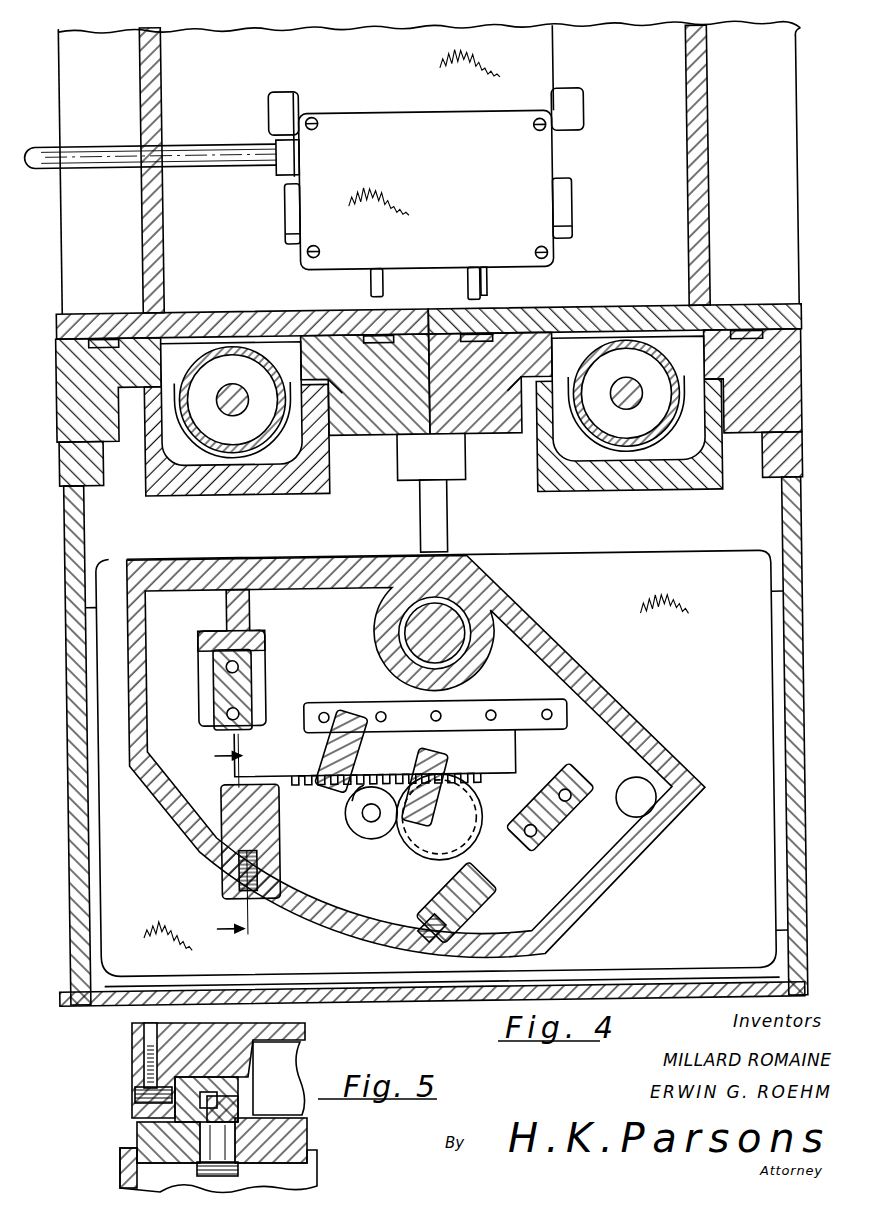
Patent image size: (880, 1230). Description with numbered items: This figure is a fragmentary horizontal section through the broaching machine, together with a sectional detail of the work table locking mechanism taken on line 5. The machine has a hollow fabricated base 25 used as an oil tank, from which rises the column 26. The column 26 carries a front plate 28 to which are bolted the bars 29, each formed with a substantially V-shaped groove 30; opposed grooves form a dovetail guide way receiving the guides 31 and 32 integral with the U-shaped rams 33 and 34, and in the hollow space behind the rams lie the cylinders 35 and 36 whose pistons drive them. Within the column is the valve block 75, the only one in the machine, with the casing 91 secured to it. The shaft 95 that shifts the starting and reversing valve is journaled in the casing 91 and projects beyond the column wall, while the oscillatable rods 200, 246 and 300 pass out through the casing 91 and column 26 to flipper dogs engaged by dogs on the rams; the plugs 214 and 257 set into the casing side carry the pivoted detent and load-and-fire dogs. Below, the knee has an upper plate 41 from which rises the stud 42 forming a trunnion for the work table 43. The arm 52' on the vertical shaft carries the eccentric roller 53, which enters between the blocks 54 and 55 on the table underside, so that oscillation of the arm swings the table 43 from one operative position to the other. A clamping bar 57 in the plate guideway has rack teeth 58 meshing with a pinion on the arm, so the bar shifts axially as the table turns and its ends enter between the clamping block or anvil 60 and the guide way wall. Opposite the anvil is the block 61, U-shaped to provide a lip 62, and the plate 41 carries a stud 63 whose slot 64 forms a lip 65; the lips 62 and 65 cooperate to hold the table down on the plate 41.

In FIG. 4, the valve block 75 is at (561, 62).
In FIG. 4, the column 26 is at (715, 95).
In FIG. 4, the shaft 95 is at (228, 151).
In FIG. 4, the casing 91 is at (563, 170).
In FIG. 4, the plug 257 is at (295, 220).
In FIG. 4, the plug 214 is at (580, 210).
In FIG. 4, the oscillatable rod 246 is at (377, 296).
In FIG. 4, the oscillatable rod 200 is at (474, 294).
In FIG. 4, the rod 300 is at (492, 280).
In FIG. 4, the front plate 28 is at (614, 312).
In FIG. 4, the guide 31 is at (138, 440).
In FIG. 4, the V-shaped groove 30 is at (345, 440).
In FIG. 4, the bar 29 is at (392, 434).
In FIG. 4, the guide 32 is at (727, 436).
In FIG. 4, the ram 33 is at (197, 494).
In FIG. 4, the cylinder 35 is at (262, 492).
In FIG. 4, the ram 34 is at (604, 493).
In FIG. 4, the cylinder 36 is at (660, 486).
In FIG. 4, the base 25 is at (392, 1003).
In FIG. 4, the table 43 is at (528, 620).
In FIG. 5, the table 43 is at (303, 1031).
In FIG. 4, the stud 42 is at (483, 598).
In FIG. 4, the clamping block 60 is at (212, 677).
In FIG. 4, the block 54 is at (340, 716).
In FIG. 4, the block 55 is at (445, 760).
In FIG. 4, the clamping bar 57 is at (512, 752).
In FIG. 4, the rack teeth 58 is at (356, 794).
In FIG. 4, the roller 53 is at (362, 826).
In FIG. 4, the arm 52' is at (426, 826).
In FIG. 4, the block 61 is at (220, 800).
In FIG. 4, the stud 63 is at (280, 820).
In FIG. 5, the stud 63 is at (218, 1118).
In FIG. 4, the section line 5— 5 is at (238, 837).
In FIG. 5, the upper plate 41 is at (308, 1150).
In FIG. 5, the lip 65 is at (236, 1074).
In FIG. 5, the slot 64 is at (224, 1099).
In FIG. 5, the lip 62 is at (178, 1135).